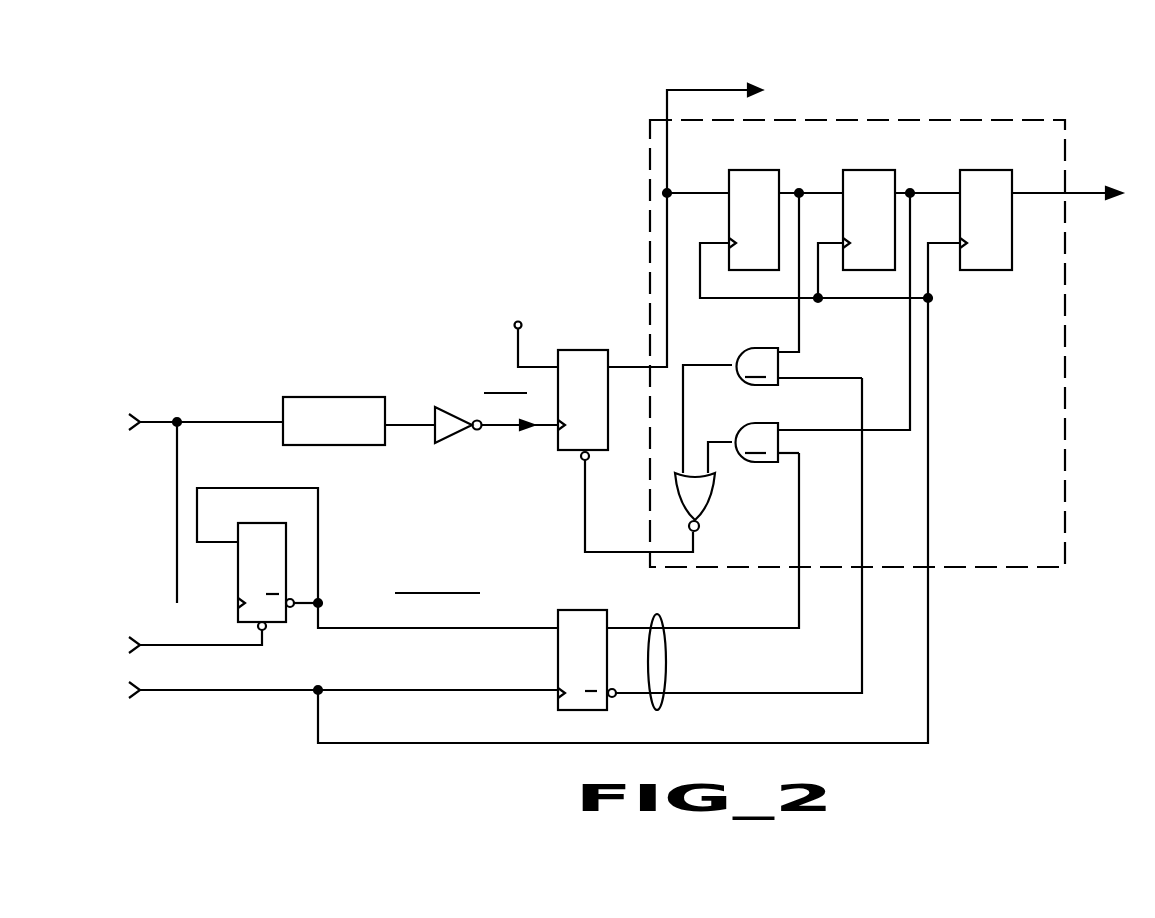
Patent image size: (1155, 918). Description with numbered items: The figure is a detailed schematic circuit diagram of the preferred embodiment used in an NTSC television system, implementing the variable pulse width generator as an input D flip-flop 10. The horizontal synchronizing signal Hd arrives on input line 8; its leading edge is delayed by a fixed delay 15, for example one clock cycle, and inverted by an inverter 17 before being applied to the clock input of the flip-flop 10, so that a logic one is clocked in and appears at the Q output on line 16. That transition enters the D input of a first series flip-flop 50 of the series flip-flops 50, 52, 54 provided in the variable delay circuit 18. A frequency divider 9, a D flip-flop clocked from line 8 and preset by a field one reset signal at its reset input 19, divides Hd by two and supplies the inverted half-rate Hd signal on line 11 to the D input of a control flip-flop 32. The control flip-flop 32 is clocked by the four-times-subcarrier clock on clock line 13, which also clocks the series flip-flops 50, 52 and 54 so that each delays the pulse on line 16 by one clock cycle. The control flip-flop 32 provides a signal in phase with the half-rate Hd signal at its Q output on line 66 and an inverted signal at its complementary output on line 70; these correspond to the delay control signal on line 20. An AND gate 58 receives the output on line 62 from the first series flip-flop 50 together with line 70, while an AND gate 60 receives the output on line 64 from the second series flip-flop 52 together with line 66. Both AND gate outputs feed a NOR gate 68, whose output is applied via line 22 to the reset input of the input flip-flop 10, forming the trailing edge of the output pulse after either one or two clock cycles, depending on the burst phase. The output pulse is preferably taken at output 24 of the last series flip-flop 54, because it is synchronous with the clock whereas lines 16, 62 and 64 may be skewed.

The input line 8 is at (156, 427).
The frequency divider 9 is at (275, 523).
The input D flip-flop 10 is at (573, 350).
The line 11 is at (328, 626).
The clock line 13 is at (152, 695).
The delay 15 is at (322, 397).
The output line 16 is at (667, 222).
The inverter 17 is at (452, 409).
The variable delay circuit 18 is at (958, 128).
The field 1 input 19 is at (146, 650).
The line 20 is at (663, 706).
The line 22 is at (584, 500).
The output 24 is at (1082, 193).
The control flip-flop 32 is at (575, 610).
The first series flip-flop 50 is at (738, 170).
The second series flip-flop 52 is at (851, 170).
The last series flip-flop 54 is at (968, 170).
The AND gate 58 is at (772, 410).
The AND gate 60 is at (753, 448).
The line 62 is at (802, 334).
The line 64 is at (893, 436).
The line 66 is at (752, 626).
The NOR gate 68 is at (716, 496).
The line 70 is at (858, 655).